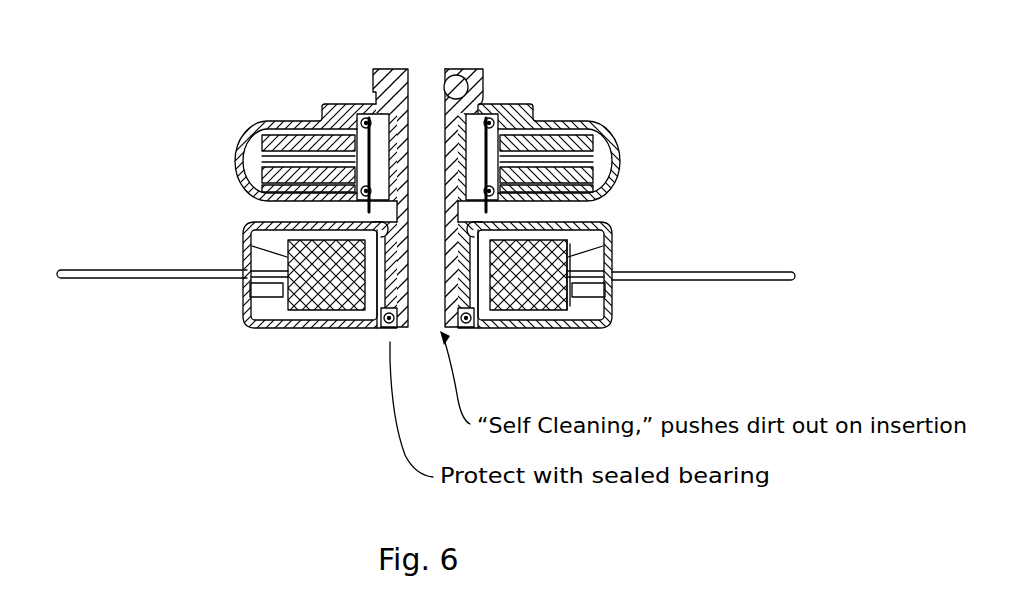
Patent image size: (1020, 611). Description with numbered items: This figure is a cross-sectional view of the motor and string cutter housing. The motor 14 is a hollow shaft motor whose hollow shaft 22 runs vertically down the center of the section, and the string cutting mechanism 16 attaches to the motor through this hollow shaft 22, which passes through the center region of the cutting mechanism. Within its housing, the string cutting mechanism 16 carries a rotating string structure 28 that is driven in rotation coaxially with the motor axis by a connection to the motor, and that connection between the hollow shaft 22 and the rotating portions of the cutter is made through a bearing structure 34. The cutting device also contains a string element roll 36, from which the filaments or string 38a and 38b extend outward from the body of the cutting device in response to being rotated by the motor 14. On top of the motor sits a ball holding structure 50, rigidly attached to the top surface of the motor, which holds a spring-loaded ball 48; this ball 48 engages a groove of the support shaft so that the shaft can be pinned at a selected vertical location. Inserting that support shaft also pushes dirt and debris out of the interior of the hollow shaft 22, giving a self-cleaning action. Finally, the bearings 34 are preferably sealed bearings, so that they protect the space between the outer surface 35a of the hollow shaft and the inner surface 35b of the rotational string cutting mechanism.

The motor 14 is at (615, 132).
The string cutting mechanism 16 is at (604, 241).
The hollow shaft 22 is at (375, 331).
The rotating string structure 28 is at (582, 259).
The bearing structure 34 is at (386, 340).
The outer surface of the hollow shaft 35a is at (480, 212).
The inner surface of the rotational string cutting mechanism 35b is at (367, 210).
The string element roll 36 is at (287, 256).
The string 38a is at (188, 279).
The string 38b is at (655, 281).
The ball 48 is at (468, 82).
The ball holding structure 50 is at (496, 98).